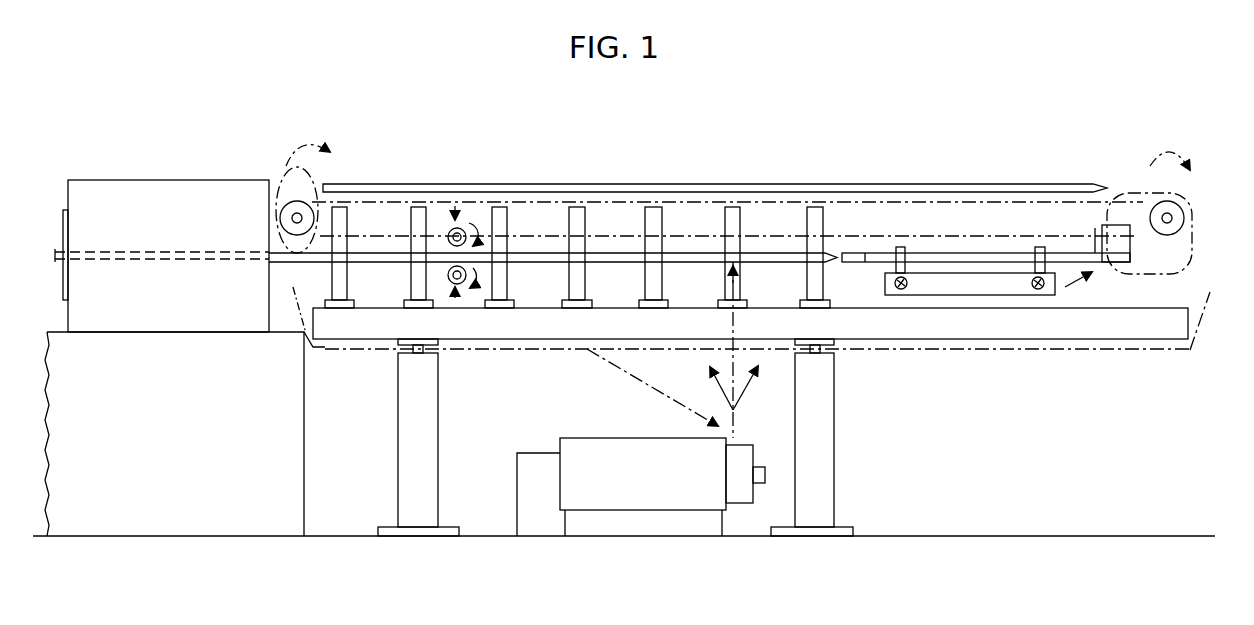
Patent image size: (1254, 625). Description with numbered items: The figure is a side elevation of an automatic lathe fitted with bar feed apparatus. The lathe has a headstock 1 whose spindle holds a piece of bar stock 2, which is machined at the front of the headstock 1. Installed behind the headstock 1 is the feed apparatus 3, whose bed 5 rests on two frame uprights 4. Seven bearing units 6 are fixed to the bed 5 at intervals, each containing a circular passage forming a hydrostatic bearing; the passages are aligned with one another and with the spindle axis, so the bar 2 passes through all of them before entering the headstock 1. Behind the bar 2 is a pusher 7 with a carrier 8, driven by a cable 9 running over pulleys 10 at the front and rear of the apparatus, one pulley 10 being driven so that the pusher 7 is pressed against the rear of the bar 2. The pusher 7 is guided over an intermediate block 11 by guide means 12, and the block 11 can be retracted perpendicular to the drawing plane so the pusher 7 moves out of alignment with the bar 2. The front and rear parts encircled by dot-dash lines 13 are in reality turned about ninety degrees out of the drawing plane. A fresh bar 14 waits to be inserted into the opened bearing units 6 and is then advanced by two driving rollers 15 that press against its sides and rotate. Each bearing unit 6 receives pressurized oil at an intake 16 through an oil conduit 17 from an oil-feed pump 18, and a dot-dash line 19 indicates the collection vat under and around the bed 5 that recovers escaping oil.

The headstock 1 is at (155, 188).
The bar stock 2 is at (287, 258).
The feed apparatus 3 is at (1003, 352).
The frame uprights 4 is at (430, 382).
The bed 5 is at (1112, 328).
The bearing units 6 is at (652, 210).
The pusher 7 is at (962, 257).
The carrier 8 is at (1108, 228).
The cable 9 is at (846, 203).
The pulleys 10 is at (292, 204).
The intermediate block 11 is at (1012, 283).
The guide means 12 is at (900, 255).
The dot-dash lines 13 is at (280, 175).
The fresh bar 14 is at (708, 186).
The driving rollers 15 is at (447, 235).
The pressurized oil intake 16 is at (738, 272).
The oil conduit 17 is at (732, 378).
The oil-feed pump 18 is at (590, 463).
The dot-dash line 19 is at (1143, 353).